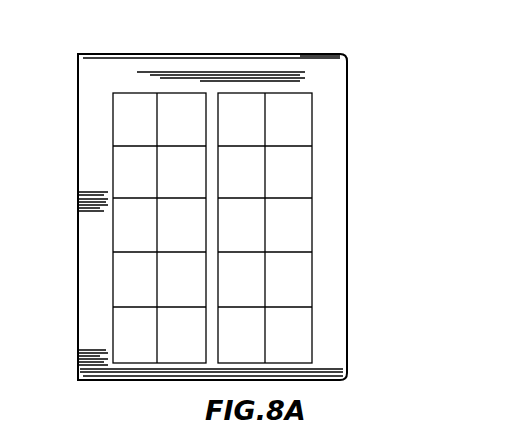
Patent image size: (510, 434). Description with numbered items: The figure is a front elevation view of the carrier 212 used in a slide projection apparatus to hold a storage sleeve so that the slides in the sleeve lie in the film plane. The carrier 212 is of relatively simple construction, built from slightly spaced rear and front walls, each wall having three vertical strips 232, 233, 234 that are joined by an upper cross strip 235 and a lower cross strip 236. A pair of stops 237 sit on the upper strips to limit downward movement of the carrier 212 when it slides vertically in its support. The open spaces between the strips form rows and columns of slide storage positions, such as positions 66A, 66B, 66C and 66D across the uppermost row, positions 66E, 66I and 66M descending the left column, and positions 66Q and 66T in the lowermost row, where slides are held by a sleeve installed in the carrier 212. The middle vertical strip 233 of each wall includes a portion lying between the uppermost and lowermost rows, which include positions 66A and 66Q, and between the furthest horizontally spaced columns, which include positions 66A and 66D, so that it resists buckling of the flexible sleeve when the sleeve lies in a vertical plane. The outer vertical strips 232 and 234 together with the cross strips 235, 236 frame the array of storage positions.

The carrier 212 is at (74, 56).
The vertical strip 232 is at (86, 123).
The middle vertical strip 233 is at (210, 154).
The vertical strip 234 is at (332, 90).
The upper cross strip 235 is at (185, 78).
The lower cross strip 236 is at (140, 372).
The stop 237 is at (307, 58).
The slide storage position 66A is at (132, 123).
The slide storage position 66B is at (177, 123).
The slide storage position 66C is at (237, 123).
The slide storage position 66D is at (283, 123).
The slide storage position 66E is at (132, 175).
The slide storage position 66I is at (129, 233).
The slide storage position 66M is at (134, 286).
The slide storage position 66Q is at (133, 341).
The slide storage position 66T is at (282, 341).